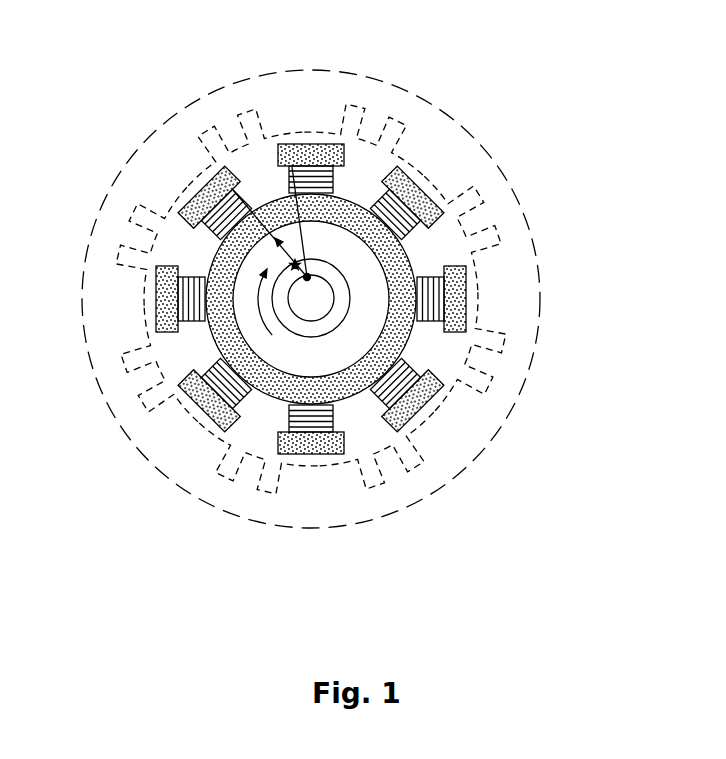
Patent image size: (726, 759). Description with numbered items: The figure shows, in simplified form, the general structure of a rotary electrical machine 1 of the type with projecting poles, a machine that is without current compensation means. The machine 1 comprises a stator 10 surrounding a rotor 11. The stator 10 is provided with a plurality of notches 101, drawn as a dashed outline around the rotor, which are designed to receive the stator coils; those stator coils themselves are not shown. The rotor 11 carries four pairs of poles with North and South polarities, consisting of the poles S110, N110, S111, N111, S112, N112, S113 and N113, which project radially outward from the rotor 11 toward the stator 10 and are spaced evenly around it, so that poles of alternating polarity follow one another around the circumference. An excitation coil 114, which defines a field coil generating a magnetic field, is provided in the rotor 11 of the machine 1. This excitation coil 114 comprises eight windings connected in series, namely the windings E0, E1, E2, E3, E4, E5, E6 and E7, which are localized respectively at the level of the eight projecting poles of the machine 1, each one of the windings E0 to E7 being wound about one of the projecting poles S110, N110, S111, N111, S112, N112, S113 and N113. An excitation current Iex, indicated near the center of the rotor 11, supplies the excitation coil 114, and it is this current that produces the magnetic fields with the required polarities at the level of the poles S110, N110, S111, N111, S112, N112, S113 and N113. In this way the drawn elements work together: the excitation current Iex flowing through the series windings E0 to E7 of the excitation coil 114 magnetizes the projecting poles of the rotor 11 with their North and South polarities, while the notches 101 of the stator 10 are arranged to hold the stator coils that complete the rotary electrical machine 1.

The rotary electrical machine 1 is at (435, 47).
The stator 10 is at (497, 193).
The notches 101 is at (388, 128).
The rotor 11 is at (400, 350).
The excitation coil 114 is at (309, 275).
The excitation current Iex is at (290, 266).
The pole N113 is at (325, 150).
The pole S110 is at (433, 200).
The pole N110 is at (466, 316).
The pole S111 is at (440, 393).
The pole N111 is at (325, 455).
The pole S112 is at (218, 417).
The pole N112 is at (154, 322).
The pole S113 is at (183, 212).
The winding E0 is at (405, 235).
The winding E1 is at (424, 277).
The winding E2 is at (385, 405).
The winding E3 is at (289, 411).
The winding E4 is at (203, 380).
The winding E5 is at (188, 272).
The winding E6 is at (240, 192).
The winding E7 is at (344, 152).